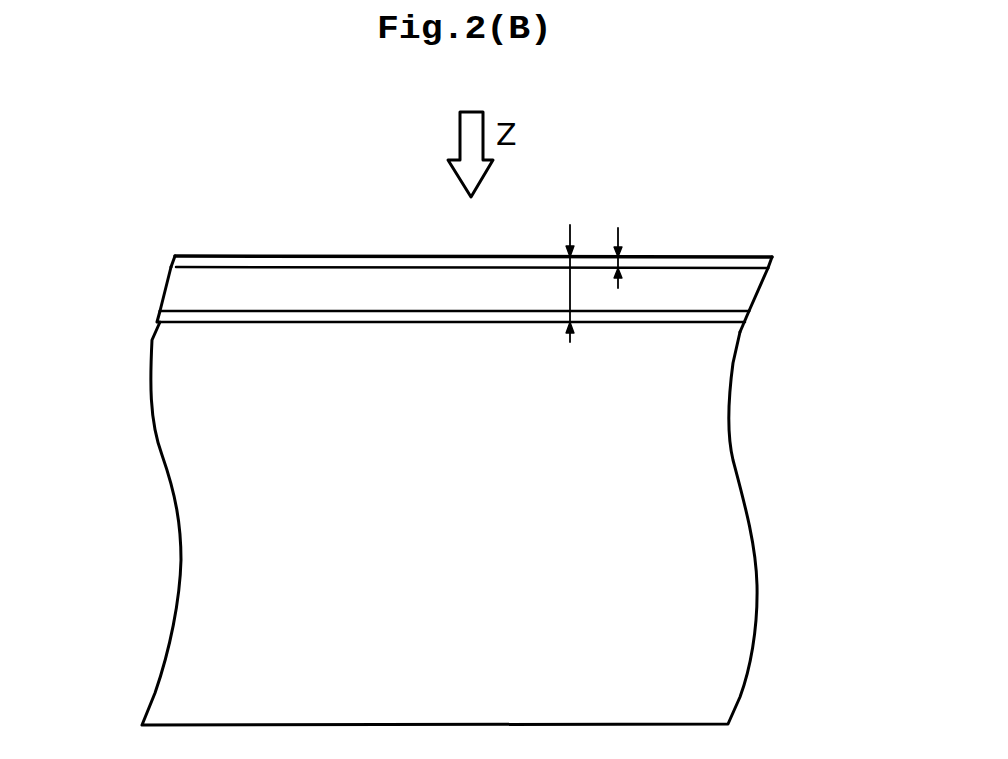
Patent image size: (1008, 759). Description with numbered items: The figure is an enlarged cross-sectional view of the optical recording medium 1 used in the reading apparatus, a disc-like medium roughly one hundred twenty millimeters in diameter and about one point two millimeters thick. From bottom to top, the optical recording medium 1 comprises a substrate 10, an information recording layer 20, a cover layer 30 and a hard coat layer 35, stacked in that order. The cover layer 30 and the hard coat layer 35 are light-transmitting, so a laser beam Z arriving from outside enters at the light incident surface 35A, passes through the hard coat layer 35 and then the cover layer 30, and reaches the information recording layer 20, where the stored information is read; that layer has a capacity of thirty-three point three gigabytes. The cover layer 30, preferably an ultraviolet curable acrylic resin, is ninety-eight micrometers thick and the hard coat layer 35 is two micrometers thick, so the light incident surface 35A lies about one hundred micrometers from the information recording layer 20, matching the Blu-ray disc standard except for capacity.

The optical recording medium 1 is at (464, 424).
The substrate 10 is at (745, 632).
The information recording layer 20 is at (738, 318).
The cover layer 30 is at (177, 289).
The hard coat layer 35 is at (432, 237).
The light incident surface 35A is at (473, 227).